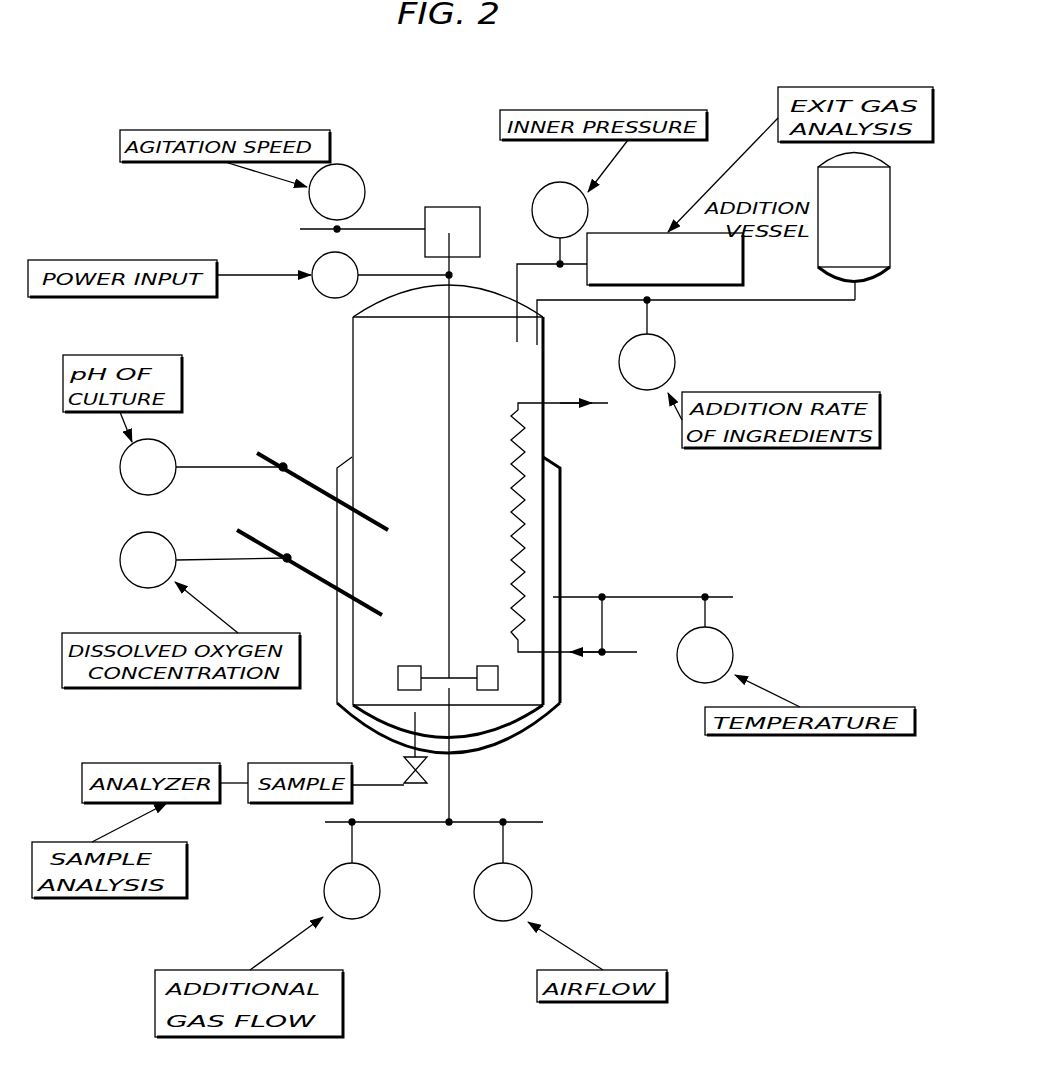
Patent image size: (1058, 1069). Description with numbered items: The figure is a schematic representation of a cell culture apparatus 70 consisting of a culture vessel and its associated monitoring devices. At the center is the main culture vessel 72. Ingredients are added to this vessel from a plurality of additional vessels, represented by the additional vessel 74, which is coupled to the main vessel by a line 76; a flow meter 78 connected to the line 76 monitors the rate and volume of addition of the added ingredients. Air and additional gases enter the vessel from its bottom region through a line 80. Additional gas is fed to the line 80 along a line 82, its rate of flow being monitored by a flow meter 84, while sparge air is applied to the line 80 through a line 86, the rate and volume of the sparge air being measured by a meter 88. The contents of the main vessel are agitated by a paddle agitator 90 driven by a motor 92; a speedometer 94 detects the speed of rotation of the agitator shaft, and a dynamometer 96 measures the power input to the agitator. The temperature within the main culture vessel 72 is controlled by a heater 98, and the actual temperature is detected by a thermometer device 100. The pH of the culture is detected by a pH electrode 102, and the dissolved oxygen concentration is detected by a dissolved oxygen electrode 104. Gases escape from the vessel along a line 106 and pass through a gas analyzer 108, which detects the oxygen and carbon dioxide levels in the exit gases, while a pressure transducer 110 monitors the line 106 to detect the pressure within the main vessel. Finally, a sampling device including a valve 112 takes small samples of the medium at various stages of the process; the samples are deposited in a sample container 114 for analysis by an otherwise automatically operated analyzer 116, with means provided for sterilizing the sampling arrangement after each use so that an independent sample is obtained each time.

The fermentation control system 70 is at (482, 118).
The main culture vessel 72 is at (543, 368).
The additional vessel 74 is at (823, 250).
The line 76 is at (580, 302).
The flow meter 78 is at (675, 371).
The line 80 is at (449, 775).
The line 82 is at (392, 826).
The flow meter 84 is at (378, 918).
The line 86 is at (527, 821).
The meter 88 is at (530, 872).
The paddle agitator 90 is at (481, 666).
The motor 92 is at (455, 207).
The speedometer 94 is at (372, 163).
The dynamometer 96 is at (325, 298).
The heater 98 is at (518, 497).
The thermometer device 100 is at (727, 630).
The pH electrode 102 is at (303, 474).
The dissolved oxygen electrode 104 is at (308, 571).
The line 106 is at (521, 253).
The gas analyzer 108 is at (605, 240).
The pressure transducer 110 is at (540, 194).
The valve 112 is at (404, 760).
The sample container 114 is at (318, 763).
The analyzer 116 is at (202, 763).